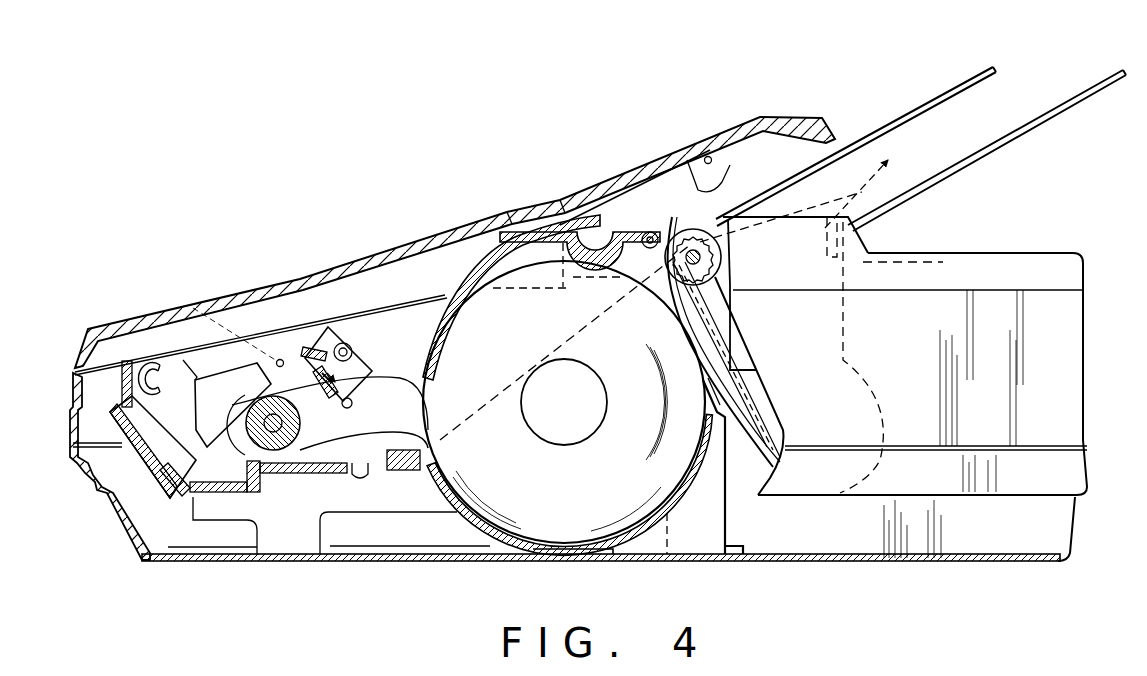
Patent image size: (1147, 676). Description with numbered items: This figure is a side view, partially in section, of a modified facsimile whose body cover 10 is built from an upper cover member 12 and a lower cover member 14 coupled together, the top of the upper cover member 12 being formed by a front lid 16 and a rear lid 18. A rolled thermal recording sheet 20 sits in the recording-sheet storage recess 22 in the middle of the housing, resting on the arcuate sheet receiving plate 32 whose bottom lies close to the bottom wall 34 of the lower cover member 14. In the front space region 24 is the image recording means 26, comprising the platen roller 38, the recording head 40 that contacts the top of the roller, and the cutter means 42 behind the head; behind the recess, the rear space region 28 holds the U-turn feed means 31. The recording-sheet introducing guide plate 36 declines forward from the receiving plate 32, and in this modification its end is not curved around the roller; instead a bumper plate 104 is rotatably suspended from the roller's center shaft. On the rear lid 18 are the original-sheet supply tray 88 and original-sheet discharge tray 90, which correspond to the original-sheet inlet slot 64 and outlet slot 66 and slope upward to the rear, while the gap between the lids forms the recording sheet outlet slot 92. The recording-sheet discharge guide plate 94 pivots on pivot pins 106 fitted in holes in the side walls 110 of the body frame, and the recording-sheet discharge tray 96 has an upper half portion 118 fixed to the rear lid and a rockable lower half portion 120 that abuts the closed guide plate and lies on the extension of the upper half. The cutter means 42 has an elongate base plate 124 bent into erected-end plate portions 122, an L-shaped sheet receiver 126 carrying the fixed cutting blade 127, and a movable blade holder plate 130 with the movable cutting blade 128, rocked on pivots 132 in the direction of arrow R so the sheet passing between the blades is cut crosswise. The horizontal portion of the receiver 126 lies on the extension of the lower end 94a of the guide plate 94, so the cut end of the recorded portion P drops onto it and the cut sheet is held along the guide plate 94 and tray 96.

The body cover 10 is at (1099, 448).
The upper cover member 12 is at (1080, 350).
The lower cover member 14 is at (1070, 554).
The front lid 16 is at (167, 306).
The rear lid 18 is at (990, 262).
The rolled thermal recording sheet 20 is at (632, 512).
The recording-sheet storage recess 22 is at (640, 262).
The front space region 24 is at (377, 503).
The image recording means 26 is at (180, 412).
The rear space region 28 is at (745, 507).
The U-turn feed means 31 is at (722, 300).
The arcuate sheet receiving plate 32 is at (533, 551).
The bottom wall 34 is at (452, 562).
The recording-sheet introducing guide plate 36 is at (330, 464).
The platen roller 38 is at (273, 463).
The recording head 40 is at (223, 397).
The cutter means 42 is at (366, 352).
The original-sheet inlet slot 64 is at (700, 212).
The original-sheet outlet slot 66 is at (822, 216).
The original-sheet supply tray 88 is at (911, 115).
The original-sheet discharge tray 90 is at (1054, 110).
The recording sheet outlet slot 92 is at (548, 205).
The recording-sheet discharge guide plate 94 is at (480, 263).
The lower end of recording-sheet discharge guide plate 94a is at (424, 418).
The recording-sheet discharge tray 96 is at (735, 79).
The bumper plate 104 is at (182, 462).
The pivot pin 106 is at (654, 232).
The side wall 110 is at (380, 403).
The upper half portion 118 is at (727, 137).
The lower half portion 120 is at (667, 183).
The erected-end plate portion 122 is at (333, 327).
The elongate base plate 124 is at (350, 407).
The L-shaped sheet receiver 126 is at (330, 396).
The fixed cutting blade 127 is at (323, 387).
The movable cutting blade 128 is at (283, 357).
The movable blade holder plate 130 is at (312, 348).
The pivot 132 is at (360, 342).